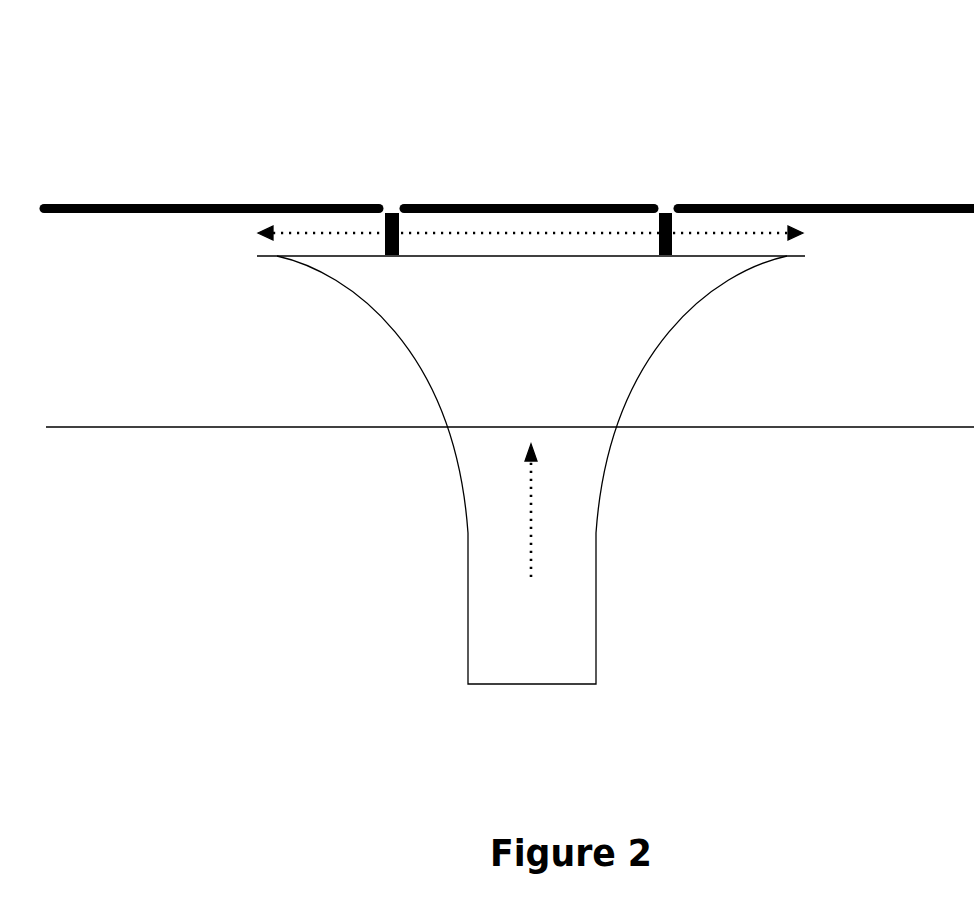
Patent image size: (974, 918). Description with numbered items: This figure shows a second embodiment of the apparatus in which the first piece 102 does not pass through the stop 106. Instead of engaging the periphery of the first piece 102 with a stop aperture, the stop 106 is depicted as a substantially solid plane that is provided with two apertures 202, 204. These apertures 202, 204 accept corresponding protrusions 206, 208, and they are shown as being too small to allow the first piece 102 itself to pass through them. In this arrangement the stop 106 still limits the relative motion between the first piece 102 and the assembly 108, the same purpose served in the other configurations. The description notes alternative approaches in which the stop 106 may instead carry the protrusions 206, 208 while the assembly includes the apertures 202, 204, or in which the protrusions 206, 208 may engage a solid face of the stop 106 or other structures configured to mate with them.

The first piece 102 is at (596, 575).
The stop 106 is at (178, 204).
The assembly 108 is at (149, 427).
The aperture 202 is at (390, 204).
The aperture 204 is at (665, 205).
The protrusion 206 is at (389, 257).
The protrusion 208 is at (666, 257).